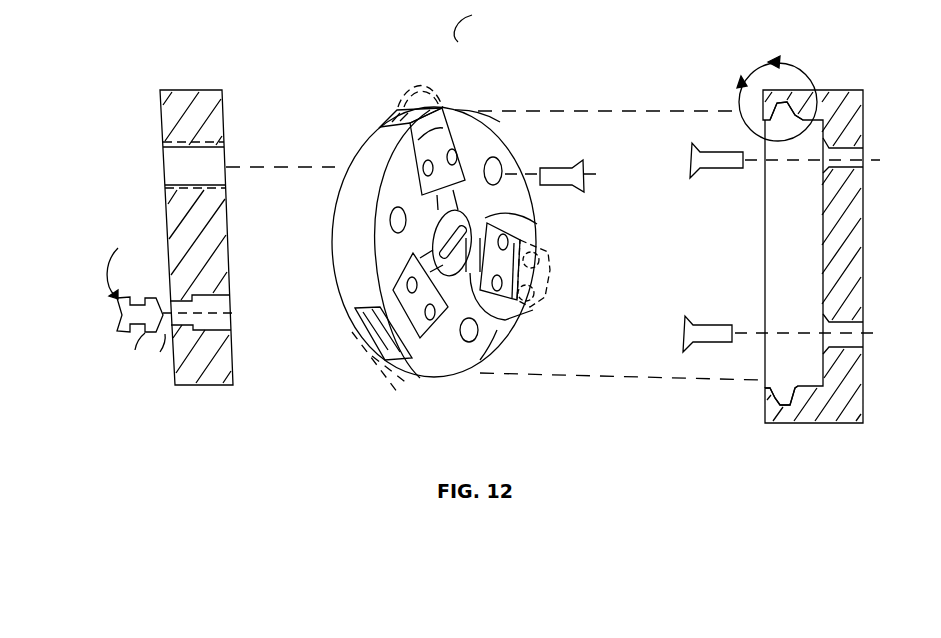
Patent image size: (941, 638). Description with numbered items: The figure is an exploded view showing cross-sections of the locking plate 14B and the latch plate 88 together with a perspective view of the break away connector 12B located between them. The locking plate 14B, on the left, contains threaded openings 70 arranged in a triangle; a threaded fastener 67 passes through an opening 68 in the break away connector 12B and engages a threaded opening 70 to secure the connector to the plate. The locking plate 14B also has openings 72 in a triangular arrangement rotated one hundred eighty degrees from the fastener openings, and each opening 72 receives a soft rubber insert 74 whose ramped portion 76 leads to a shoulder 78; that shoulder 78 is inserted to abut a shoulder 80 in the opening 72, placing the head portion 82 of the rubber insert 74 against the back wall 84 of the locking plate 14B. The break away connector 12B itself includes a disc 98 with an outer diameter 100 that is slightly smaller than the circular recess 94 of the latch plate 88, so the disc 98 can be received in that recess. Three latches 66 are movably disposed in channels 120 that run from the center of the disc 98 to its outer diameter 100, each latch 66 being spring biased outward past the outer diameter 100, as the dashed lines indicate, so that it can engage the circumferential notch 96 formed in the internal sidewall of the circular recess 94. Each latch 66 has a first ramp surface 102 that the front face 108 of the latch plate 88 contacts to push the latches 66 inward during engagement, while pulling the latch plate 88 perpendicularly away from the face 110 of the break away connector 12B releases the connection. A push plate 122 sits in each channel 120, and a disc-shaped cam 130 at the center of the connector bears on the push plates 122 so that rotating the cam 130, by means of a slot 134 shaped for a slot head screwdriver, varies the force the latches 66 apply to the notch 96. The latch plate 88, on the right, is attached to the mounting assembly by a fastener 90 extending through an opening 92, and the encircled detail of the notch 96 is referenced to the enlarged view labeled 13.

The locking plate 14B is at (196, 86).
The threaded opening 70 is at (226, 162).
The back wall 84 is at (167, 212).
The head portion 82 is at (125, 262).
The rubber insert 74 is at (122, 289).
The shoulder 78 is at (130, 356).
The ramped portion 76 is at (160, 362).
The opening 72 is at (236, 308).
The shoulder 80 is at (231, 327).
The outer diameter 100 is at (360, 240).
The disc 98 is at (468, 104).
The face 110 is at (490, 342).
The opening 68 is at (497, 160).
The first ramp surface 102 is at (440, 127).
The cam 130 is at (432, 222).
The break away connector 12B is at (479, 21).
The channel 120 is at (520, 233).
The slot 134 is at (452, 192).
The push plate 122 is at (540, 306).
The latch 66 is at (428, 327).
The threaded fastener 67 is at (588, 176).
The fastener 90 is at (688, 174).
The latch plate 88 is at (845, 86).
The opening 92 is at (866, 153).
The circumferential notch 96 is at (783, 100).
The view circle for FIG. 13 is at (777, 98).
The circular recess 94 is at (792, 260).
The front face 108 is at (760, 408).